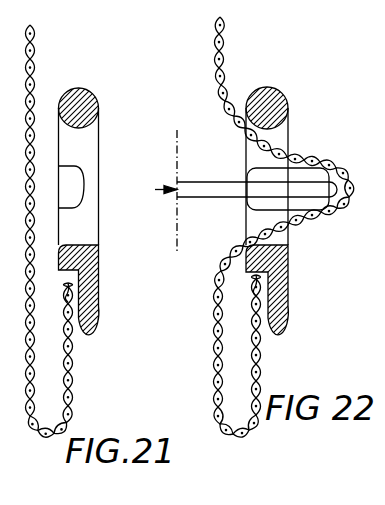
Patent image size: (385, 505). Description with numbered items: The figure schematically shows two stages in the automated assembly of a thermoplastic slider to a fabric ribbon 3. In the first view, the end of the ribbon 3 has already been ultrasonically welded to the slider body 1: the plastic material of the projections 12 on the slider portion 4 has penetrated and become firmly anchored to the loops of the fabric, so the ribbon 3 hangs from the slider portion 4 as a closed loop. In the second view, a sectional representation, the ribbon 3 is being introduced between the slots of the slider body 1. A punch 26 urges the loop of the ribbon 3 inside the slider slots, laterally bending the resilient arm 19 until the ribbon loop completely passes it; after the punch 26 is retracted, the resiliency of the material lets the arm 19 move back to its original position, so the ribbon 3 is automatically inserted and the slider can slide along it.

In FIG. 21, the body 1 is at (88, 102).
In FIG. 22, the body 1 is at (276, 100).
In FIG. 21, the fabric ribbon 3 is at (28, 355).
In FIG. 22, the fabric ribbon 3 is at (216, 340).
In FIG. 21, the slider portion 4 is at (94, 303).
In FIG. 22, the slider portion 4 is at (282, 300).
In FIG. 21, the projections 12 is at (66, 296).
In FIG. 22, the projections 12 is at (253, 300).
In FIG. 21, the arm 19 is at (72, 185).
In FIG. 22, the arm 19 is at (309, 175).
In FIG. 22, the punch 26 is at (200, 180).